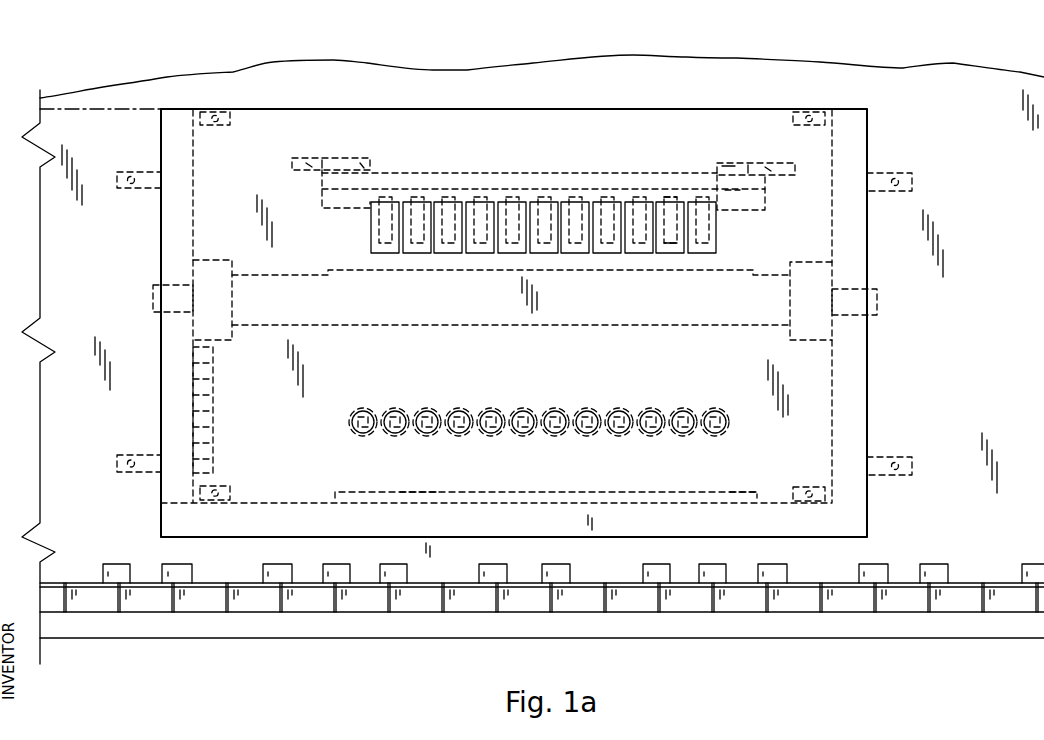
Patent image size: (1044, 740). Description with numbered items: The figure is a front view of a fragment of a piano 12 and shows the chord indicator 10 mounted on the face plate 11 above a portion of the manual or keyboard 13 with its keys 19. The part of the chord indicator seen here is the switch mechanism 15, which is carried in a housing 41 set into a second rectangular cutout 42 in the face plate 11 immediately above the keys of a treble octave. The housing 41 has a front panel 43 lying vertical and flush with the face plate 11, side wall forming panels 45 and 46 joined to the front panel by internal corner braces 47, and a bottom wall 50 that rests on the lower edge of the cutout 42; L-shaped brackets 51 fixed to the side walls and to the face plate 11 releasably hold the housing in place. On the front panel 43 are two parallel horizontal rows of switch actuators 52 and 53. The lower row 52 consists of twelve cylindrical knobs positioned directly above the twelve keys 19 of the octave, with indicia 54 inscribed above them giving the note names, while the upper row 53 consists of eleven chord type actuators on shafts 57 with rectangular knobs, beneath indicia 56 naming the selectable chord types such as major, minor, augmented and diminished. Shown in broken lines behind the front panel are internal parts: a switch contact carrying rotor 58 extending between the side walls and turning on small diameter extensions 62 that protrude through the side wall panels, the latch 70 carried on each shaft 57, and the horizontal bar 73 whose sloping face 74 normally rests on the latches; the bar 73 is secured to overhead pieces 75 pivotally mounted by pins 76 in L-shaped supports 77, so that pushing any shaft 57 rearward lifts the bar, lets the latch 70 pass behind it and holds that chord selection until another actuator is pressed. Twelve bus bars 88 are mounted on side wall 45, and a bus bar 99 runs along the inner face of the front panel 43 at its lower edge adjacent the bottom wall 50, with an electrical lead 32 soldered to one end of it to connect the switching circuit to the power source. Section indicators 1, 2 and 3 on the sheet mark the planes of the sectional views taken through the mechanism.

The section line 1- 1 is at (24, 90).
The section line 2- 2 is at (867, 109).
The section line 3- 3 is at (623, 335).
The chord indicator 10 is at (161, 242).
The face plate 11 is at (732, 82).
The piano 12 is at (509, 64).
The manual or keyboard 13 is at (629, 614).
The switch mechanism 15 is at (265, 108).
The keys 19 is at (192, 565).
The electrical lead 32 is at (760, 492).
The housing 41 is at (360, 108).
The second rectangular cutout 42 is at (161, 437).
The front panel 43 is at (250, 202).
The side wall forming panel 45 is at (172, 108).
The side wall forming panel 46 is at (857, 109).
The internal corner braces 47 is at (230, 122).
The bottom wall 50 is at (292, 502).
The L-shaped brackets 51 is at (120, 172).
The lower row of switch actuators 52 is at (590, 437).
The upper row of switch actuators 53 is at (716, 242).
The indicia 54 is at (360, 384).
The indicia 56 is at (536, 140).
The shafts 57 is at (665, 247).
The switch contact carrying rotor 58 is at (205, 258).
The small diameter extensions 62 is at (152, 312).
The latch 70 is at (669, 202).
The horizontal bar 73 is at (756, 210).
The sloping face 74 is at (713, 190).
The overhead pieces 75 is at (322, 158).
The pins 76 is at (310, 160).
The L-shaped supports 77 is at (362, 160).
The bus bars 88 is at (213, 370).
The bus bar 99 is at (416, 492).